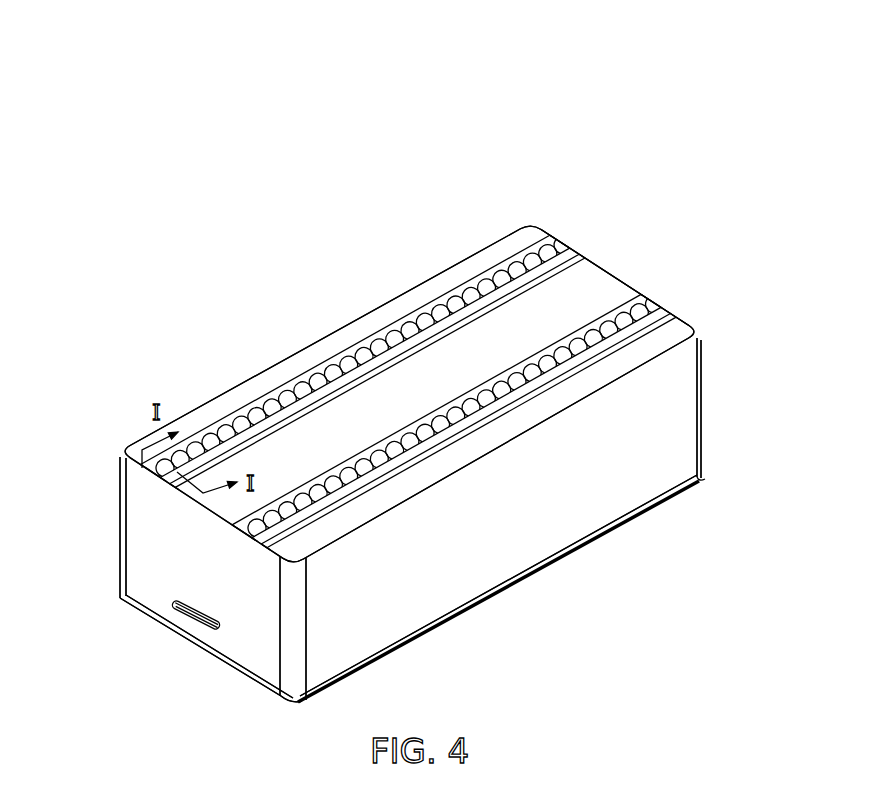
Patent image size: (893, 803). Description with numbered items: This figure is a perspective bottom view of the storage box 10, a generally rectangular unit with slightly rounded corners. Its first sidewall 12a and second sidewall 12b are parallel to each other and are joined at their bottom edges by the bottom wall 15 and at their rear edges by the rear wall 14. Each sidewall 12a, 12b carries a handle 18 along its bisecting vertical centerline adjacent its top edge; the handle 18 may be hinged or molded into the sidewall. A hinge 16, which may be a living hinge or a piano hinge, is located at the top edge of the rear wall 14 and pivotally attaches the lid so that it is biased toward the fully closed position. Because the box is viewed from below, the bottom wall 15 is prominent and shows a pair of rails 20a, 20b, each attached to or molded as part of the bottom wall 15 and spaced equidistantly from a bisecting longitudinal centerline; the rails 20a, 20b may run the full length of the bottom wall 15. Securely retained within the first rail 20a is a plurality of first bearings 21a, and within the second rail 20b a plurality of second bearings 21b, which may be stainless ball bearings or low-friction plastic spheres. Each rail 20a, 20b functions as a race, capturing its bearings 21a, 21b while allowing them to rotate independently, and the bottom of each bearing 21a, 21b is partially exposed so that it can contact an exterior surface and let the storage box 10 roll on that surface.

The storage box 10 is at (150, 196).
The first sidewall 12a is at (615, 273).
The second sidewall 12b is at (152, 562).
The rear wall 14 is at (482, 545).
The bottom wall 15 is at (350, 348).
The hinge 16 is at (605, 530).
The handle 18 is at (215, 610).
The first rail 20a is at (662, 298).
The second rail 20b is at (561, 240).
The first bearings 21a is at (663, 302).
The second bearings 21b is at (563, 246).